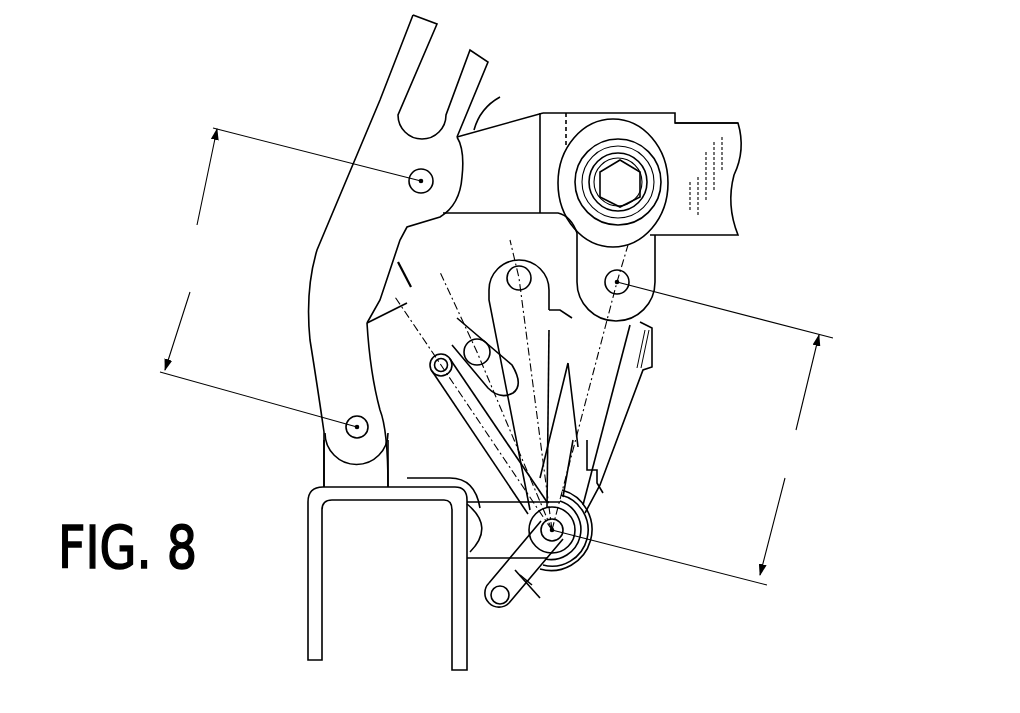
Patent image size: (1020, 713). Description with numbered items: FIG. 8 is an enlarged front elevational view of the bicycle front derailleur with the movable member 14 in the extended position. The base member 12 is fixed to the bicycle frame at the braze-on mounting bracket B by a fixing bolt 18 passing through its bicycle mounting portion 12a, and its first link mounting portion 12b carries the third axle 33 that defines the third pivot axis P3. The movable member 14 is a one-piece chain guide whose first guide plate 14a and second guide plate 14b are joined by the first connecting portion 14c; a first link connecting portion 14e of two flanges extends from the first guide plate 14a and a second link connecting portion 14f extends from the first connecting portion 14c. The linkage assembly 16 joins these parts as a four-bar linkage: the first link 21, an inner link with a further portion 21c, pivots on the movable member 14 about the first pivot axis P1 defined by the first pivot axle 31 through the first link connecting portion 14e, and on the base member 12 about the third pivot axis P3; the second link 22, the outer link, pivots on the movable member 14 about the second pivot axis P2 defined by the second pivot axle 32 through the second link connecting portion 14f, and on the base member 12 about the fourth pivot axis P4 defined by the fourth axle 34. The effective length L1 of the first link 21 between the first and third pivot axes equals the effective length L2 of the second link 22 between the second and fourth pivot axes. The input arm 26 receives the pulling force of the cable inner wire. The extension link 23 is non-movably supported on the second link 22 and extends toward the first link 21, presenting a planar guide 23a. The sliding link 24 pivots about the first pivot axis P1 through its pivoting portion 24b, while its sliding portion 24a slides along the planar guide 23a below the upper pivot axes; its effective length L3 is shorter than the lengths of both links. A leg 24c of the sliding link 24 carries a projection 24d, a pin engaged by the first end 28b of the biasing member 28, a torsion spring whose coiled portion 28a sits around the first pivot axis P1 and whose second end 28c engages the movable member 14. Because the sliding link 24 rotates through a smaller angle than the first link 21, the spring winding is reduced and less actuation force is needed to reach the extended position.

The base member 12 is at (572, 110).
The bicycle mounting portion 12a is at (617, 120).
The first link mounting portion 12b is at (573, 253).
The movable member 14 is at (374, 574).
The first guide plate 14a is at (452, 587).
The second guide plate 14b is at (308, 636).
The first connecting portion 14c is at (367, 500).
The first link connecting portion 14e is at (482, 543).
The second link connecting portion 14f is at (324, 470).
The linkage assembly 16 is at (652, 390).
The fixing bolt 18 is at (633, 152).
The first link 21 is at (631, 430).
The lever portion 21c is at (478, 128).
The second link 22 is at (314, 248).
The extension link 23 is at (392, 252).
The planar guide 23a is at (367, 323).
The sliding link 24 is at (432, 396).
The sliding portion 24a is at (430, 362).
The pivoting portion 24b is at (575, 565).
The leg 24c is at (540, 580).
The projection 24d is at (500, 605).
The input arm 26 is at (390, 78).
The biasing member 28 is at (605, 530).
The coiled portion 28a is at (592, 555).
The first end 28b is at (530, 600).
The second end 28c is at (473, 525).
The first pivot axle 31 is at (587, 503).
The second pivot axle 32 is at (335, 445).
The third axle 33 is at (629, 282).
The fourth axle 34 is at (409, 185).
The braze-on mounting bracket B is at (703, 123).
The first pivot axis P1 is at (552, 530).
The second pivot axis P2 is at (357, 427).
The third pivot axis P3 is at (617, 282).
The fourth pivot axis P4 is at (421, 181).
The effective length of the first link L1 is at (692, 433).
The effective length of the second link L2 is at (290, 277).
The effective length of the sliding link L3 is at (470, 437).